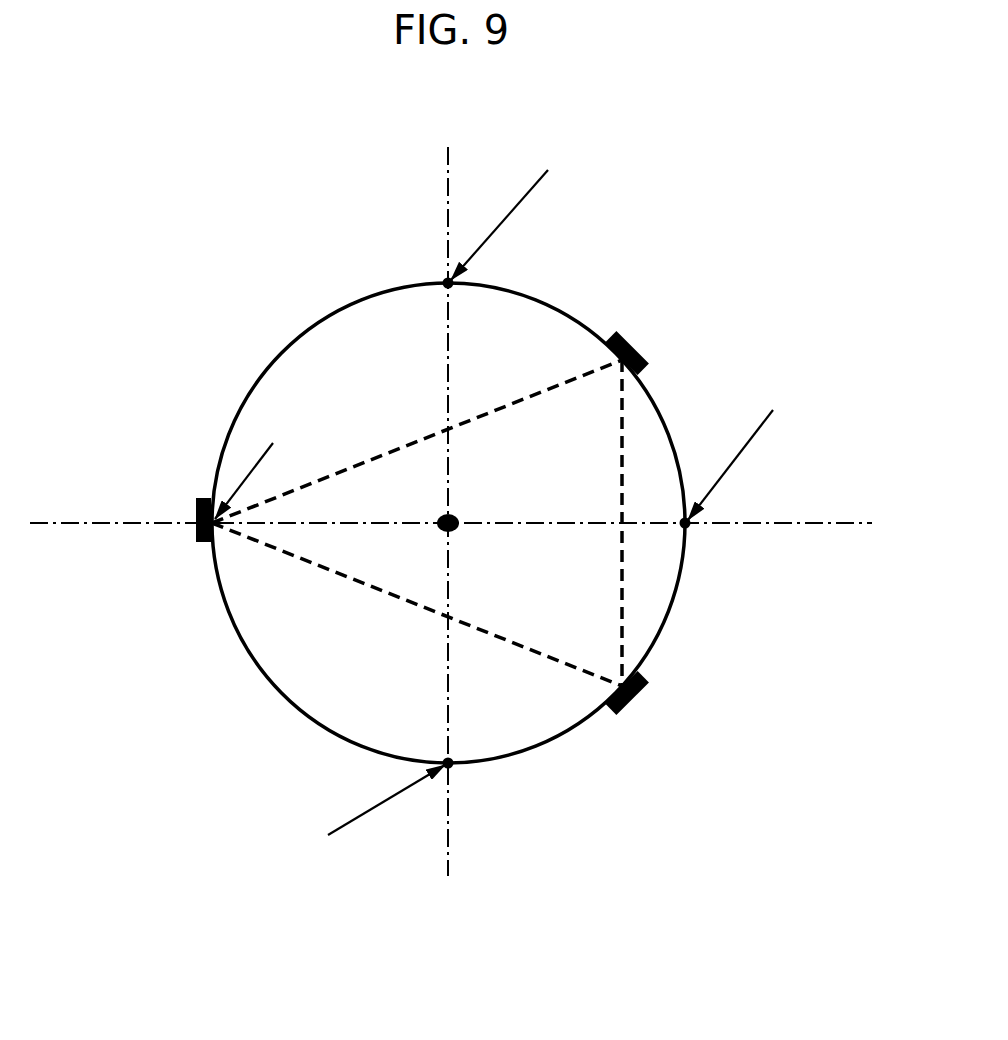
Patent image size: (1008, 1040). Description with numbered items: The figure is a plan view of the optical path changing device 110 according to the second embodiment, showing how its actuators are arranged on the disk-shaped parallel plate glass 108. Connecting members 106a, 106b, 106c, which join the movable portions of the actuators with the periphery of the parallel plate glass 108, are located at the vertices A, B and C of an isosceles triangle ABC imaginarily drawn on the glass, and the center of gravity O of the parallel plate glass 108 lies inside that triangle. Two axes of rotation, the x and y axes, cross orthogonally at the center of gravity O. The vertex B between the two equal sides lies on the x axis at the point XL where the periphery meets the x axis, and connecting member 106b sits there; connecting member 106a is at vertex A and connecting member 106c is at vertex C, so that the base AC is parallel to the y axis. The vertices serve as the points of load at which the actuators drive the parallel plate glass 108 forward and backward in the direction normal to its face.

The parallel plate glass 108 is at (508, 292).
The connecting member 106a is at (644, 352).
The connecting member 106b is at (196, 535).
The connecting member 106c is at (642, 686).
The optical path changing device 110 is at (789, 856).